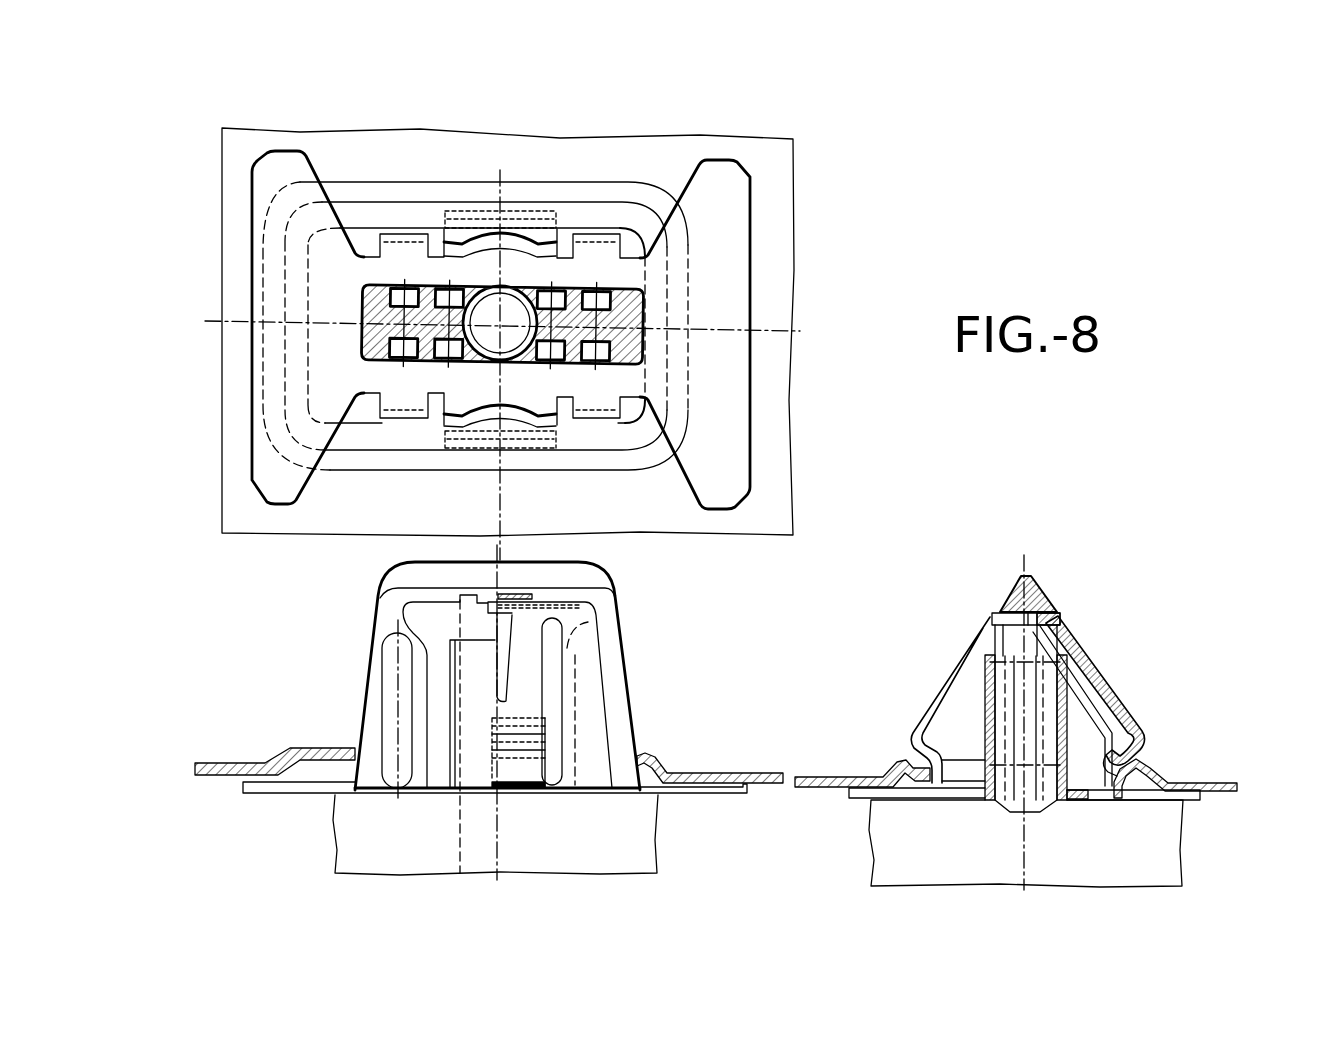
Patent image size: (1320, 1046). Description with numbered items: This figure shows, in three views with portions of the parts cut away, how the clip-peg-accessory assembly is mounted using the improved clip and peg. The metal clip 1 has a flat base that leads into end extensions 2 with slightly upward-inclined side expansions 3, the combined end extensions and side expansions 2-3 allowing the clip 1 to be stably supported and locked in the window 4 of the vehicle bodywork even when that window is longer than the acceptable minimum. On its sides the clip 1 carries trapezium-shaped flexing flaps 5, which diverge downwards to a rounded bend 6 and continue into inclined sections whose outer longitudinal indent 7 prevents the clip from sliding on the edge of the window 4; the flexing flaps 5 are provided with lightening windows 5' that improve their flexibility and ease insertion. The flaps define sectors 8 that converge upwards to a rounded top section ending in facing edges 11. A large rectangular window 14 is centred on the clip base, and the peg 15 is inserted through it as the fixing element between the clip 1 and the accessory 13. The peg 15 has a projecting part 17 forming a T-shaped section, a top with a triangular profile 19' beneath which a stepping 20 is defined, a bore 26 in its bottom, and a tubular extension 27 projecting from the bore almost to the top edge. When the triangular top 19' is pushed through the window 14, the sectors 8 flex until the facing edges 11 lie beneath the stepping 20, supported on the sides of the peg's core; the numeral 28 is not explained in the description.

The metal clip 1 is at (557, 445).
The end extensions 2 is at (295, 282).
The end extensions with side expansions 2-3 is at (290, 793).
The side expansions 3 is at (712, 168).
The window 4 is at (367, 256).
The flexing flaps 5 is at (757, 416).
The lightening windows 5' is at (844, 689).
The rounded bend 6 is at (910, 738).
The longitudinal indent 7 is at (1140, 755).
The sectors 8 is at (387, 424).
The facing edges 11 is at (1020, 616).
The accessory 13 is at (773, 215).
The rectangular window 14 is at (352, 370).
The peg 15 is at (350, 334).
The projecting part 17 is at (1086, 656).
The triangular profile top 19' is at (832, 574).
The stepping 20 is at (999, 611).
The bore 26 is at (460, 795).
The tubular extension 27 is at (522, 292).
The collar 28 is at (1003, 640).